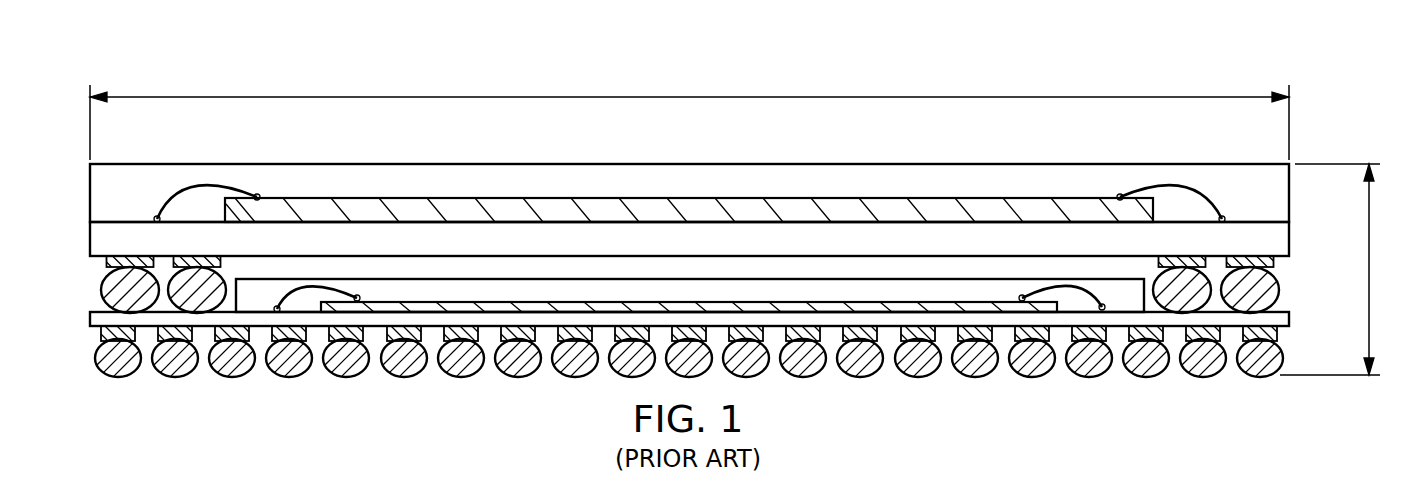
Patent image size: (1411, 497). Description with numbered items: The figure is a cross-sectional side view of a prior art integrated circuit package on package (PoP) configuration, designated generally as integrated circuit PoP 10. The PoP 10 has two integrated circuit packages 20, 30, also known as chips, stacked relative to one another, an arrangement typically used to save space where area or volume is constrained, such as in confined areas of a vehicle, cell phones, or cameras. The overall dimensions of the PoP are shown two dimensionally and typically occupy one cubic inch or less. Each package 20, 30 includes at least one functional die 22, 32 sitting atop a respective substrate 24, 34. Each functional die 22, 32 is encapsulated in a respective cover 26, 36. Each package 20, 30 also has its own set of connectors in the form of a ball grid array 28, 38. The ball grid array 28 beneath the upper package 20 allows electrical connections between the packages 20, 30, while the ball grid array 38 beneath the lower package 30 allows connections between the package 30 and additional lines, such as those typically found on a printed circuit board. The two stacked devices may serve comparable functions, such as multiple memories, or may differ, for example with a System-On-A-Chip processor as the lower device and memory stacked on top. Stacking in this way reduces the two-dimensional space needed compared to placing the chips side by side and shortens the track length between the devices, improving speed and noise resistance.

The integrated circuit PoP 10 is at (858, 73).
The integrated circuit package 20 is at (85, 165).
The functional die 22 is at (682, 208).
The substrate 24 is at (1280, 238).
The cover 26 is at (1280, 197).
The ball grid array 28 is at (85, 269).
The integrated circuit package 30 is at (85, 313).
The functional die 32 is at (952, 307).
The substrate 34 is at (548, 318).
The cover 36 is at (1126, 300).
The ball grid array 38 is at (85, 342).